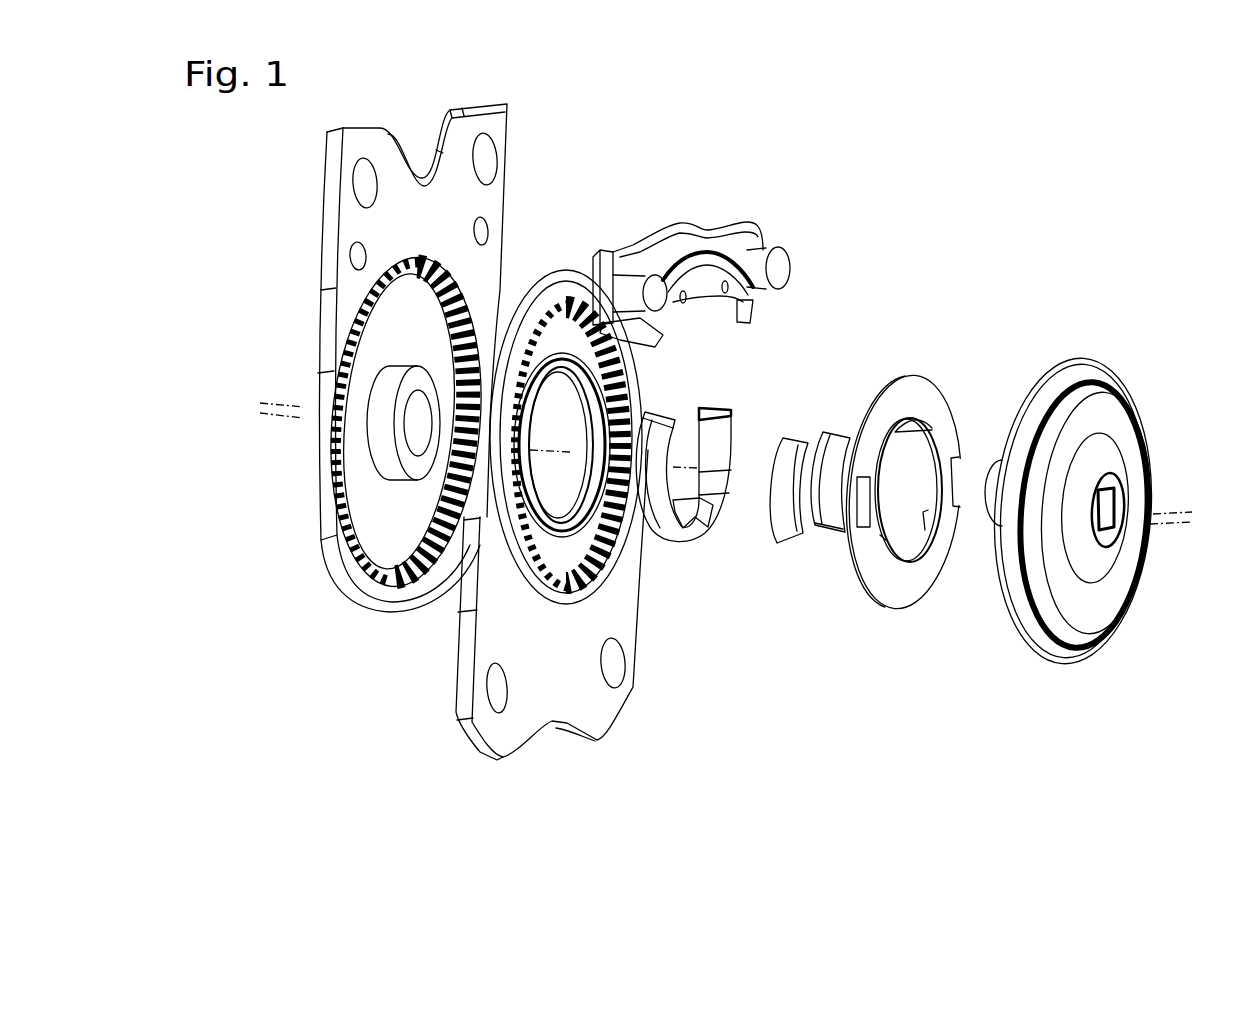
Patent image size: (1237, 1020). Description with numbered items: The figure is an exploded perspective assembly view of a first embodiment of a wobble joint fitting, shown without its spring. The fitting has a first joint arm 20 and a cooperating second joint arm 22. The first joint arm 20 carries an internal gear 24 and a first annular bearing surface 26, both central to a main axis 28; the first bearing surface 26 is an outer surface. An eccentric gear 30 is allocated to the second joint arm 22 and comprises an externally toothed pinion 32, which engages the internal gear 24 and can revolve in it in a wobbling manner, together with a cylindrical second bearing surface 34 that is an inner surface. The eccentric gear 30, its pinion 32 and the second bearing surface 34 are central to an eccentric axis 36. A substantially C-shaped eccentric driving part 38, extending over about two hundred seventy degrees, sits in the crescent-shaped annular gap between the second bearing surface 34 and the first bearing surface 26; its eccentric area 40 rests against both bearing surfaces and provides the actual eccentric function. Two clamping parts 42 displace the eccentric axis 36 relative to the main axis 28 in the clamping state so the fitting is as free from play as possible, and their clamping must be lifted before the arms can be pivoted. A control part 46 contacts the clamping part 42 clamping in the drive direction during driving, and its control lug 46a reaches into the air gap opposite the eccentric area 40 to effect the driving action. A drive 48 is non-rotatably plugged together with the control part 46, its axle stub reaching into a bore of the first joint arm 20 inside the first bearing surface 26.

The first joint arm 20 is at (283, 548).
The second joint arm 22 is at (552, 752).
The internal gear 24 is at (455, 305).
The first annular bearing surface 26 is at (388, 393).
The main axis 28 is at (1168, 515).
The eccentric gear 30 is at (547, 280).
The externally toothed pinion 32 is at (515, 307).
The second bearing surface 34 is at (577, 410).
The eccentric axis 36 is at (1187, 530).
The eccentric driving part 38 is at (686, 578).
The eccentric area 40 is at (693, 530).
The clamping parts 42 is at (810, 455).
The control part 46 is at (932, 423).
The control lug 46a is at (930, 423).
The drive 48 is at (1113, 583).